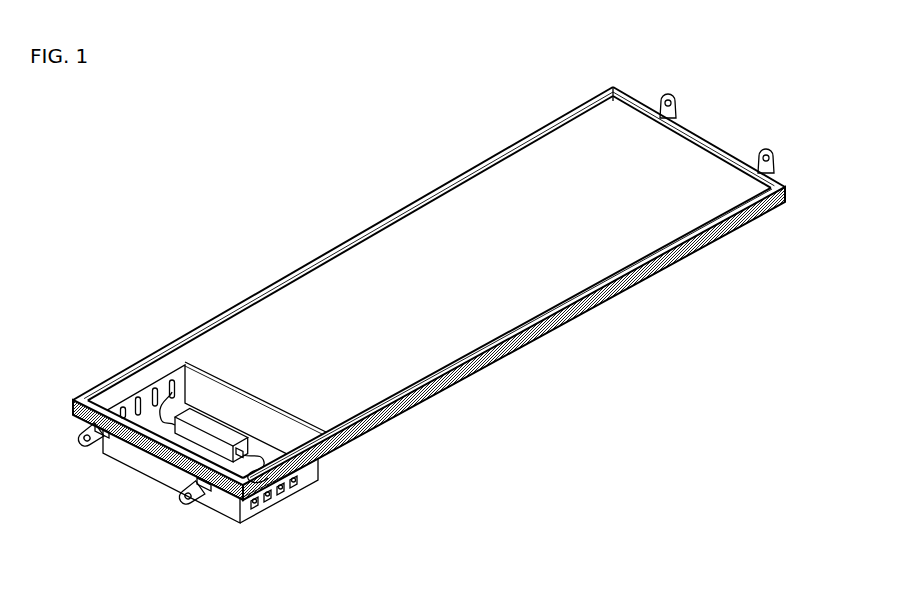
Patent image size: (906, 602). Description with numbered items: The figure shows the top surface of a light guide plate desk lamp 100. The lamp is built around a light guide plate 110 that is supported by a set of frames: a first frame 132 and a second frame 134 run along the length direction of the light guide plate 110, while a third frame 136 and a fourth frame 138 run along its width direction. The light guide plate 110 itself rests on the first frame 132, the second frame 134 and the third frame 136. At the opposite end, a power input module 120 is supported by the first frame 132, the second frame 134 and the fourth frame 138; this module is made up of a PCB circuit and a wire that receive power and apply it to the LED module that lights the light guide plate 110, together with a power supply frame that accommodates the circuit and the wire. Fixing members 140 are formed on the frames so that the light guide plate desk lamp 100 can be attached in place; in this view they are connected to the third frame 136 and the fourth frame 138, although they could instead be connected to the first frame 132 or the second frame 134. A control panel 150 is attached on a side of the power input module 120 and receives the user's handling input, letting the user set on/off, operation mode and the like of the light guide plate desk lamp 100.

The light guide plate desk lamp 100 is at (403, 95).
The light guide plate 110 is at (398, 360).
The power input module 120 is at (165, 383).
The first frame 132 is at (376, 228).
The second frame 134 is at (560, 310).
The third frame 136 is at (697, 125).
The fourth frame 138 is at (165, 452).
The fixing members 140 is at (663, 95).
The control panel 150 is at (318, 478).